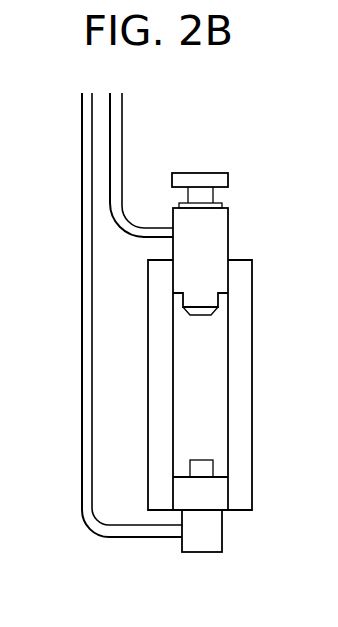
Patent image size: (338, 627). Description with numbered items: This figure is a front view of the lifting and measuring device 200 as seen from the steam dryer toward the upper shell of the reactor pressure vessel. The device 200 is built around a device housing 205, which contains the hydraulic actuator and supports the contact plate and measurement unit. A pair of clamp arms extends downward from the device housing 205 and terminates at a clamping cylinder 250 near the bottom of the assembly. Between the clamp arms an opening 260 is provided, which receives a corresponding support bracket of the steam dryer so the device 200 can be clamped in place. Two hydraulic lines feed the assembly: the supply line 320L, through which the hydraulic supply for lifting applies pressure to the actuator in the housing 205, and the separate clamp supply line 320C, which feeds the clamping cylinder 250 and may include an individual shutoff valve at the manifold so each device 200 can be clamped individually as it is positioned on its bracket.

The clamp supply line 320C is at (82, 178).
The supply line 320L is at (123, 130).
The device housing 205 is at (229, 236).
The opening 260 is at (195, 393).
The clamping cylinder 250 is at (205, 553).
The device 200 is at (232, 378).